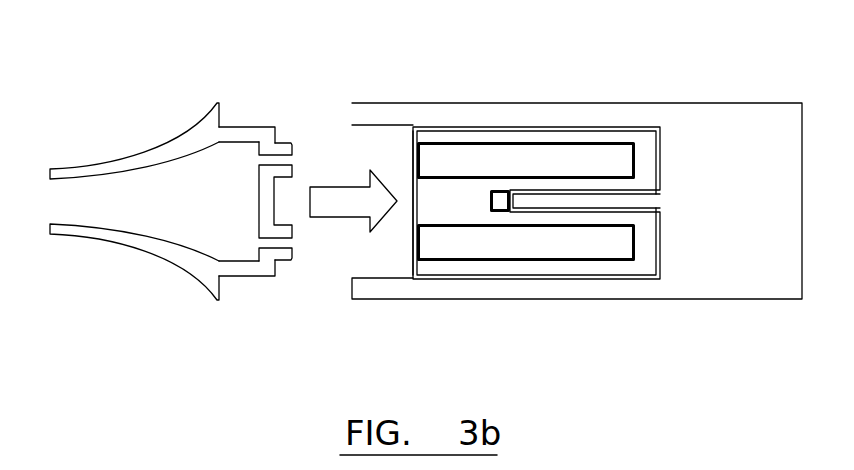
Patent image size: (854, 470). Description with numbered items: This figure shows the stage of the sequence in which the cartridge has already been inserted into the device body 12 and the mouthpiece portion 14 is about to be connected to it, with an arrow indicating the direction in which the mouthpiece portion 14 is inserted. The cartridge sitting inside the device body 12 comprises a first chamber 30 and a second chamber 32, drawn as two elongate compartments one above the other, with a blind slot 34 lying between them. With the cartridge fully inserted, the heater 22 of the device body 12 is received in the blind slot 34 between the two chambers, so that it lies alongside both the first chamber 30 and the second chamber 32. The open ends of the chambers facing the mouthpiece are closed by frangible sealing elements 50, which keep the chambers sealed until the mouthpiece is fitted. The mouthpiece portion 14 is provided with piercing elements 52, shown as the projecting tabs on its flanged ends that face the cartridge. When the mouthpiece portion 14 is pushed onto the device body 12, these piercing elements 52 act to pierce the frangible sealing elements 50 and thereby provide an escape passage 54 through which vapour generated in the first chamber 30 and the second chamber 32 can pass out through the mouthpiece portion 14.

The device body 12 is at (755, 103).
The mouthpiece portion 14 is at (148, 250).
The heater 22 is at (582, 200).
The first chamber 30 is at (446, 160).
The second chamber 32 is at (565, 245).
The blind slot 34 is at (498, 190).
The sealing elements 50 is at (413, 162).
The piercing elements 52 is at (288, 146).
The escape passage 54 is at (262, 160).